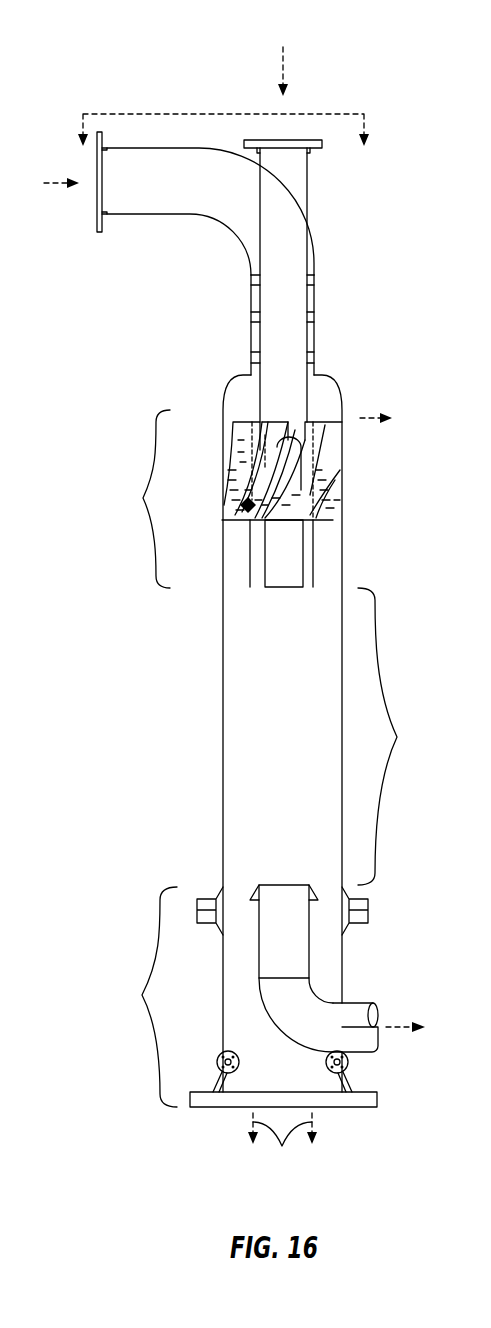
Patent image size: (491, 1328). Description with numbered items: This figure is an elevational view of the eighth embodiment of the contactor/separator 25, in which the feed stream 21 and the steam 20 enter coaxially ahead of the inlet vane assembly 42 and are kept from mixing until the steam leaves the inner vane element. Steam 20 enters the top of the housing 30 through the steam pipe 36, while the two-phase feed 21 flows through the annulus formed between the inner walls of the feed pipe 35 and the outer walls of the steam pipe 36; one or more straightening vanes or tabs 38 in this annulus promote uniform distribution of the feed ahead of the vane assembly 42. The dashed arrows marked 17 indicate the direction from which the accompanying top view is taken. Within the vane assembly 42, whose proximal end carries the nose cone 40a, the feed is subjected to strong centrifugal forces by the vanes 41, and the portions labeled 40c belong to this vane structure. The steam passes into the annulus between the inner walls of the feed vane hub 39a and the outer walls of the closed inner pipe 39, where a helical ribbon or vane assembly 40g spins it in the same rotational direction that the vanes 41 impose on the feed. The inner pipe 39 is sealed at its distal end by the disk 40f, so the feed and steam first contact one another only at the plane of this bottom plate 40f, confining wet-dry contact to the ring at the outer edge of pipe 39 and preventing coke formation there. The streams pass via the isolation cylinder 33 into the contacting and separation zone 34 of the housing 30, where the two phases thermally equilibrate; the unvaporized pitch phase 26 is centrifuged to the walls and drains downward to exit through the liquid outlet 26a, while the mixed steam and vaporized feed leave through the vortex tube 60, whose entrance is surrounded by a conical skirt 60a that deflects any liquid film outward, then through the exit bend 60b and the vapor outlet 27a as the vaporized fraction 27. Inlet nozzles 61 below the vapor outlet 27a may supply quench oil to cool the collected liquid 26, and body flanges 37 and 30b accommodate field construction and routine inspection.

The contactor/separator 25 is at (119, 43).
The steam 20 is at (283, 73).
The section line 17 is at (224, 149).
The feed 21 is at (52, 190).
The isolation cylinder 33 is at (251, 298).
The steam pipe 36 is at (307, 183).
The straightening vanes 38 is at (314, 358).
The body housing 30 is at (223, 762).
The nose cone 40a is at (309, 413).
The vane assembly 42 is at (226, 499).
The swirl vane 40c is at (262, 421).
The vanes 41 is at (317, 458).
The helical ribbon vane assembly 40g is at (252, 542).
The inner pipe 39 is at (304, 563).
The feed vane hub 39a is at (313, 540).
The disk 40f is at (271, 588).
The contacting and separation section 34 is at (391, 736).
The feed pipe 35 is at (144, 997).
The vortex tube 60 is at (311, 946).
The conical skirt 60a is at (258, 898).
The exit bend 60b is at (259, 1000).
The body flange 37 is at (356, 926).
The vapor outlet 27a is at (371, 1003).
The vaporized fraction 27 is at (419, 1011).
The inlet nozzles 61 is at (350, 1062).
The liquid outlet 26a is at (228, 1092).
The body flange 30b is at (360, 1107).
The liquid fraction 26 is at (282, 1148).